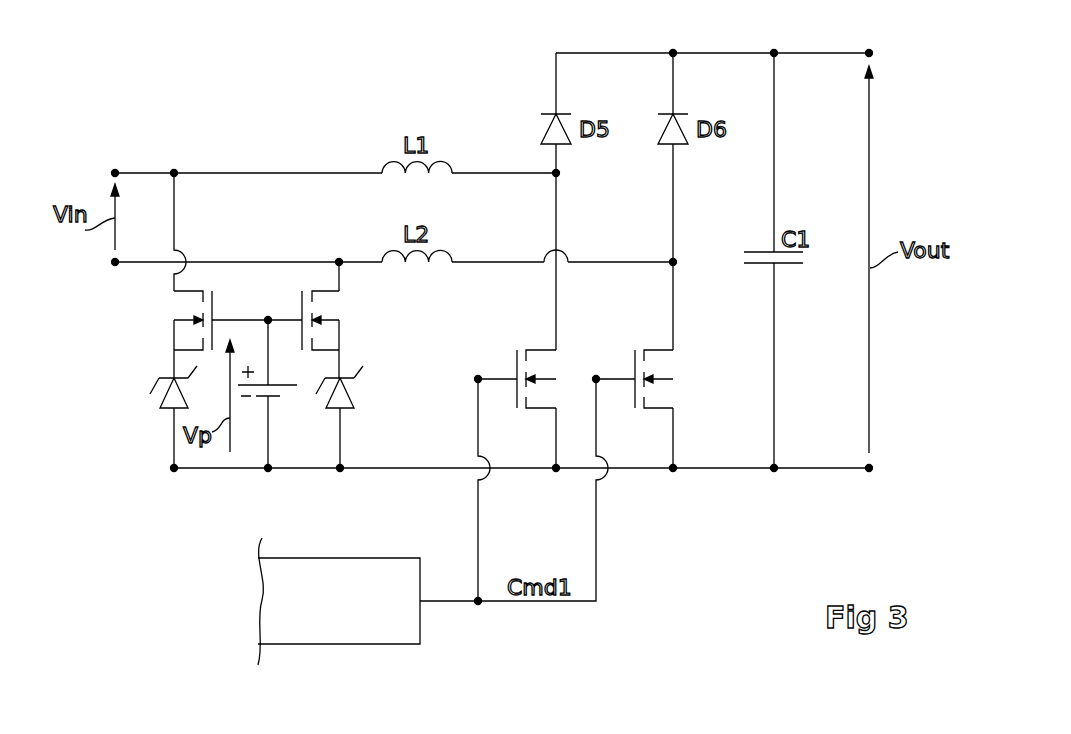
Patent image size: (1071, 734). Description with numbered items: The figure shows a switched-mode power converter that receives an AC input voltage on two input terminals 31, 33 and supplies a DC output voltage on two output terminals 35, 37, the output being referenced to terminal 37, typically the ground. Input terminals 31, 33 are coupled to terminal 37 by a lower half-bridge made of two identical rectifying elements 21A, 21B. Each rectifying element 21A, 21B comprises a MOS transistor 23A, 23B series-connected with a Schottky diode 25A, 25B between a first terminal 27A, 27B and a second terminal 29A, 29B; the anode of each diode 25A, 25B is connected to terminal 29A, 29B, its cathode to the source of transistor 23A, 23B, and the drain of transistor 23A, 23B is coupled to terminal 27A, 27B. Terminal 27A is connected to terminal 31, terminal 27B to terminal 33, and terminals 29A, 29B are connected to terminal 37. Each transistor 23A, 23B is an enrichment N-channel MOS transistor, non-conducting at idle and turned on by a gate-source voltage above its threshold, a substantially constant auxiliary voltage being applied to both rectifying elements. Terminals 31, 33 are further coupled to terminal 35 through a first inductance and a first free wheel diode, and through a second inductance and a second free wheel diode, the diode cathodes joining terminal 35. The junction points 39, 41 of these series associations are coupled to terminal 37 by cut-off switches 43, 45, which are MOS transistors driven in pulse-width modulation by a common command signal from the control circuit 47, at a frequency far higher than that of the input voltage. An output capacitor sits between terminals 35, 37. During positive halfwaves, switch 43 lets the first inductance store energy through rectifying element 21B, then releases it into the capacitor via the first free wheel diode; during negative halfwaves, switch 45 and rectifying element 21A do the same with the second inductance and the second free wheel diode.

The input terminal 31 is at (115, 173).
The input terminal 33 is at (115, 266).
The terminal of rectifying element 27A is at (174, 173).
The terminal of rectifying element 27B is at (339, 262).
The MOS transistor 23A is at (196, 298).
The MOS transistor 23B is at (340, 309).
The rectifying element 21A is at (155, 365).
The rectifying element 21B is at (356, 357).
The Schottky diode 25A is at (152, 396).
The Schottky diode 25B is at (352, 394).
The terminal of rectifying element 29A is at (174, 470).
The terminal of rectifying element 29B is at (340, 470).
The junction point 39 is at (556, 173).
The junction point 41 is at (673, 262).
The output terminal 35 is at (869, 53).
The output terminal 37 is at (869, 468).
The cut-off switch 43 is at (552, 368).
The cut-off switch 45 is at (680, 369).
The control circuit 47 is at (392, 632).